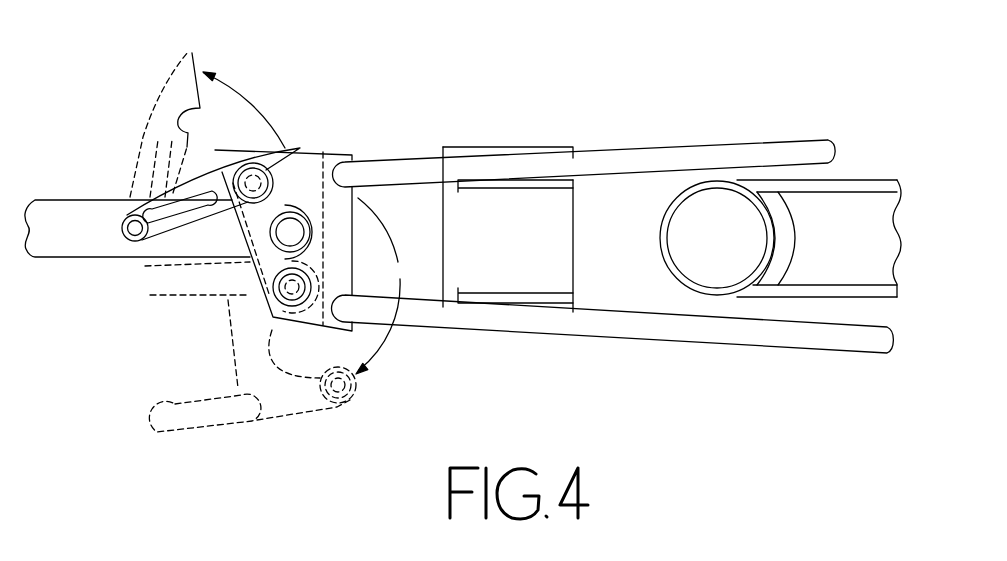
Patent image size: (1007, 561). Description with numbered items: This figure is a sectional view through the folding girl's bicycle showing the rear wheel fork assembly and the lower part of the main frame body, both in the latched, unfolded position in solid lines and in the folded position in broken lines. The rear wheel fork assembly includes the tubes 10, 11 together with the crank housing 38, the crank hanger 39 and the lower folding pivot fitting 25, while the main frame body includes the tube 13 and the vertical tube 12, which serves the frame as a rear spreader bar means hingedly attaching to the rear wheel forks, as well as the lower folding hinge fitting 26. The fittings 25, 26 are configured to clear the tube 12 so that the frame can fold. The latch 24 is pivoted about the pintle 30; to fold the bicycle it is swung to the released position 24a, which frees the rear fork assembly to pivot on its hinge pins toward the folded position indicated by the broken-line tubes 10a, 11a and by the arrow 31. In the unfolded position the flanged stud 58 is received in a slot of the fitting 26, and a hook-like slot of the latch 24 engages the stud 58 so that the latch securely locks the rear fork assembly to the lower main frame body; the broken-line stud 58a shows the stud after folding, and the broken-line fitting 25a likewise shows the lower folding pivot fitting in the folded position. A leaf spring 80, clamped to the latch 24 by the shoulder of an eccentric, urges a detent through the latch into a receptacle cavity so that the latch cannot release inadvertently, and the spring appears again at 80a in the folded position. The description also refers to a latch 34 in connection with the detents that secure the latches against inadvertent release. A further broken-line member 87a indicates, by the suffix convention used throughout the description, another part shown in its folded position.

The tube 10 is at (836, 346).
The tube in folded position 10a is at (147, 290).
The tube 11 is at (672, 128).
The tube in folded position 11a is at (192, 420).
The vertical tube 12 is at (312, 232).
The tube 13 is at (60, 201).
The latch 24 is at (219, 170).
The latch in released position 24a is at (198, 53).
The lower folding pivot fitting 25 is at (345, 152).
The lower folding pivot fitting in folded position 25a is at (303, 412).
The lower folding hinge fitting 26 is at (258, 290).
The pintle 30 is at (128, 214).
The arrow 31 is at (388, 340).
The latch 34 is at (838, 197).
The crank housing 38 is at (452, 238).
The crank hanger 39 is at (458, 188).
The flanged stud 58 is at (280, 152).
The flanged stud in folded position 58a is at (345, 393).
The leaf spring 80 is at (168, 224).
The leaf spring in folded position 80a is at (148, 152).
The cam surface in rotated position 87a is at (276, 362).